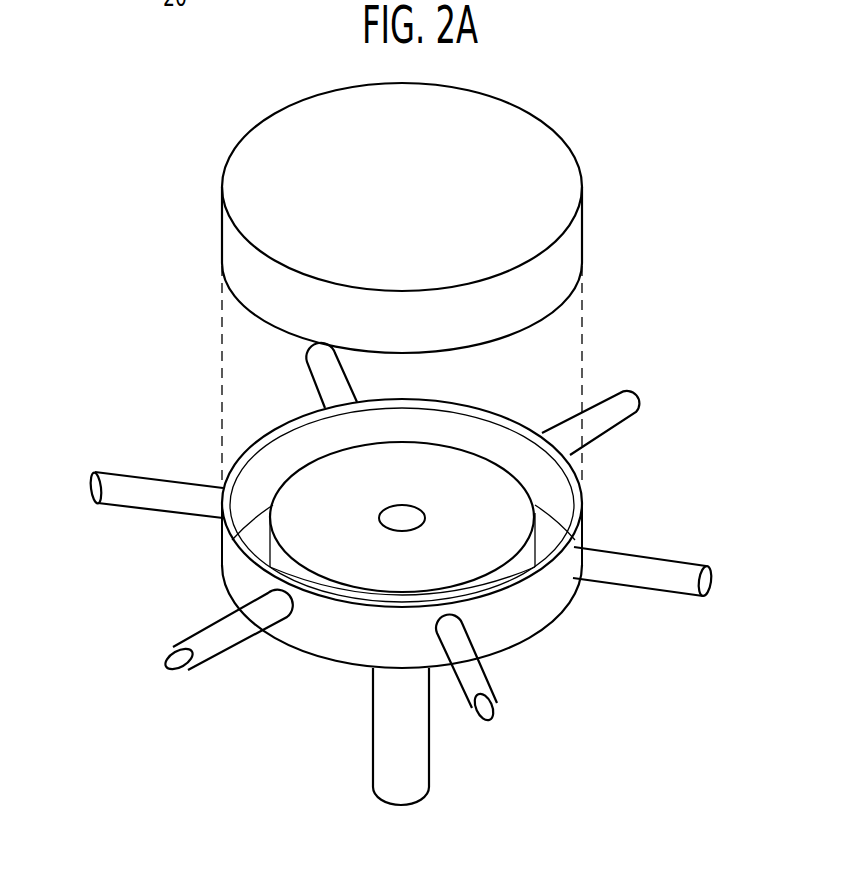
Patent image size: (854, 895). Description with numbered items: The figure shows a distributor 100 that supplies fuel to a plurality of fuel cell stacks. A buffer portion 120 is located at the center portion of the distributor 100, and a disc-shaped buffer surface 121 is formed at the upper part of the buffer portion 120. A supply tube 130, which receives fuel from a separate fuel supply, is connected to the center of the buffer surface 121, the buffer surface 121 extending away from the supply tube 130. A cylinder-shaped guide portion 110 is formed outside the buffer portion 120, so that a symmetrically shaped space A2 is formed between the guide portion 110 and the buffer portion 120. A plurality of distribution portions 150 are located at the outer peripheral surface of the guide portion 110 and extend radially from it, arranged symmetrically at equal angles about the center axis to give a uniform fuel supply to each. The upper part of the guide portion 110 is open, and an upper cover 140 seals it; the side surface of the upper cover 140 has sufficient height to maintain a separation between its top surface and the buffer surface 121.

The distributor 100 is at (124, 166).
The guide portion 110 is at (540, 613).
The buffer portion 120 is at (273, 553).
The buffer surface 121 is at (449, 488).
The supply tube 130 is at (423, 767).
The upper cover 140 is at (575, 228).
The distribution portions 150 is at (678, 570).
The symmetrically shaped space A2 is at (258, 486).